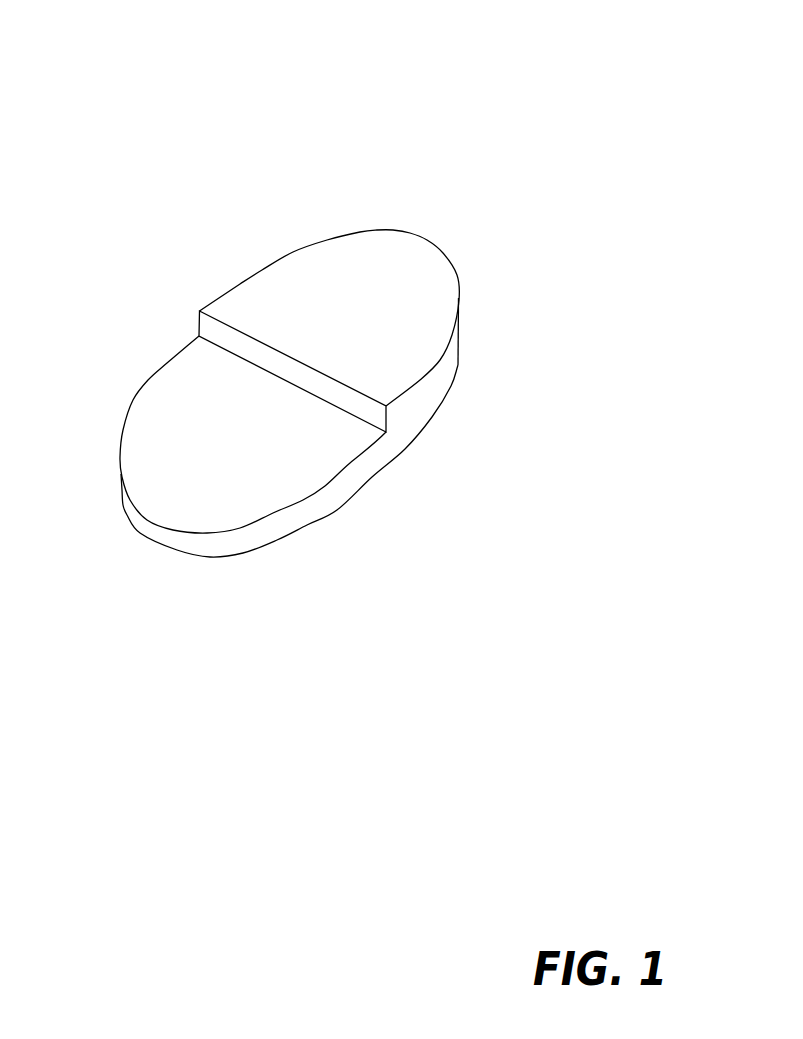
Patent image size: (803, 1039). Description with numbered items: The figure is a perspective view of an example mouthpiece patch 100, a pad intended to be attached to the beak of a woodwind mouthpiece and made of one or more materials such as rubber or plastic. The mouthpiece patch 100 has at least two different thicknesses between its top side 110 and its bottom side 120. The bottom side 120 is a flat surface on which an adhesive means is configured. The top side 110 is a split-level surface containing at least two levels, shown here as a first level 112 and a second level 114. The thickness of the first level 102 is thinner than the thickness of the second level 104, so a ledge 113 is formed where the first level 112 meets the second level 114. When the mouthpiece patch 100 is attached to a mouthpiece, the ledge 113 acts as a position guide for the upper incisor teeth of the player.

The mouthpiece patch 100 is at (181, 69).
The thickness of the first level 102 is at (97, 467).
The thickness of the second level 104 is at (484, 280).
The top side 110 is at (187, 402).
The first level 112 is at (193, 490).
The ledge 113 is at (325, 418).
The second level 114 is at (418, 278).
The bottom side 120 is at (236, 594).